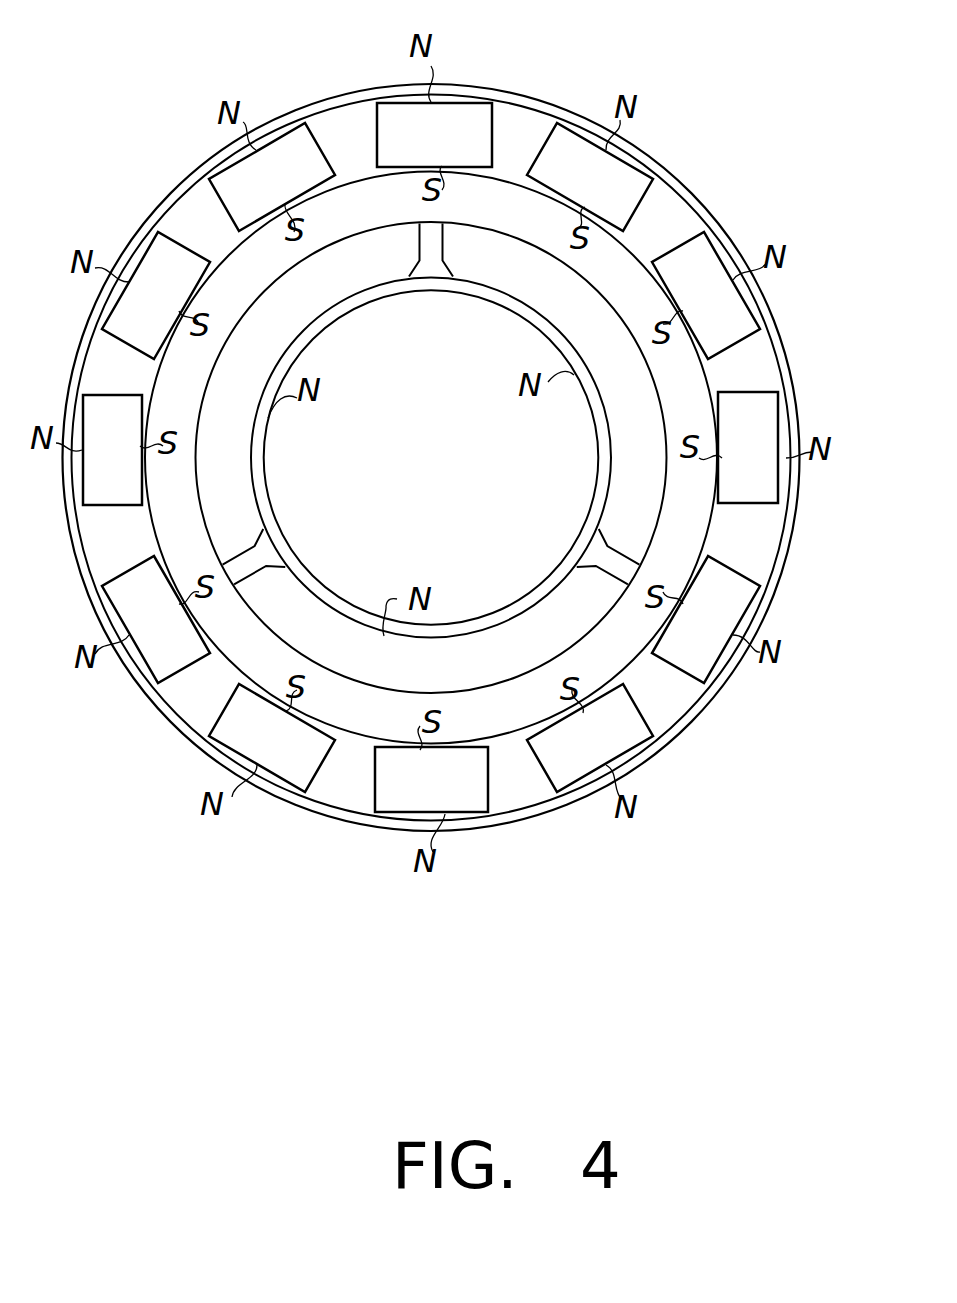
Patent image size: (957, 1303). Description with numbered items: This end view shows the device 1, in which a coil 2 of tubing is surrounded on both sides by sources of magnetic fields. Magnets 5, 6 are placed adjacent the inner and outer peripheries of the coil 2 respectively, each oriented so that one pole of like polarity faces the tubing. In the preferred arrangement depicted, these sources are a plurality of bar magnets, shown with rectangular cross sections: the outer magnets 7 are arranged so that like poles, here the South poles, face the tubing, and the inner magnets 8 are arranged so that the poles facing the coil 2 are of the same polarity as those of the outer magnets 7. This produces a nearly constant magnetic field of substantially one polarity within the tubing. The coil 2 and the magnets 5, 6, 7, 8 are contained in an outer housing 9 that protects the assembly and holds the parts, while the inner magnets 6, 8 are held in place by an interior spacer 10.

The device 1 is at (178, 118).
The coil 2 is at (357, 190).
The magnet 5 is at (802, 408).
The outer magnets 7 is at (762, 313).
The magnet 6 is at (525, 457).
The inner magnets 8 is at (525, 457).
The outer housing 9 is at (692, 190).
The interior spacer 10 is at (444, 252).